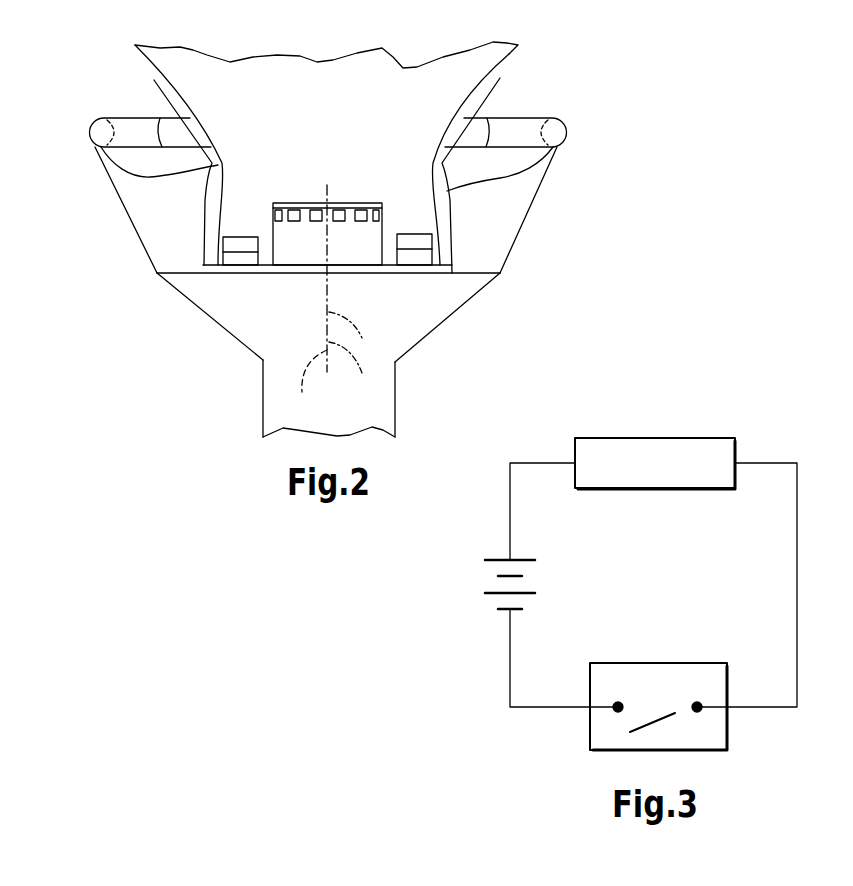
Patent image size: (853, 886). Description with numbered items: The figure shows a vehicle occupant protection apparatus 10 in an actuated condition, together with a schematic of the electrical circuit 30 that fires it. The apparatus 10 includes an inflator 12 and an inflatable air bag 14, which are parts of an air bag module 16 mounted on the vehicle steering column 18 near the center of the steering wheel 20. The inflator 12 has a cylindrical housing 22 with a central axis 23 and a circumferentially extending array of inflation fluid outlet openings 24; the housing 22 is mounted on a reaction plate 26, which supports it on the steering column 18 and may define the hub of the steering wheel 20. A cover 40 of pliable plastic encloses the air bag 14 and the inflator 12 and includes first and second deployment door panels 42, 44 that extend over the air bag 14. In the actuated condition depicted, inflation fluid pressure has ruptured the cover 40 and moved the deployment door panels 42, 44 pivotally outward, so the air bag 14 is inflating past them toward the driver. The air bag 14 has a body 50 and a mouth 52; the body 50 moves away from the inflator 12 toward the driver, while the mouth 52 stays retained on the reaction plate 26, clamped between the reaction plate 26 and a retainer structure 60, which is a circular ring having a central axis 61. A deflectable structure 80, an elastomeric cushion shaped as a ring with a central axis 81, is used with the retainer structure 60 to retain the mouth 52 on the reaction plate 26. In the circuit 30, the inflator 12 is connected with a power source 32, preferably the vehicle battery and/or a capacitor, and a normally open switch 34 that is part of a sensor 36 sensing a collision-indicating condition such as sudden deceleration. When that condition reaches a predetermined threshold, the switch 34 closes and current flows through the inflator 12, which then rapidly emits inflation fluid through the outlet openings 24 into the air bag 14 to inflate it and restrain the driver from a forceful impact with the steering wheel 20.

In FIG. 2, the vehicle occupant protection apparatus 10 is at (75, 53).
In FIG. 2, the inflator 12 is at (292, 260).
In FIG. 3, the inflator 12 is at (613, 438).
In FIG. 2, the air bag 14 is at (200, 217).
In FIG. 2, the air bag module 16 is at (183, 256).
In FIG. 2, the vehicle steering column 18 is at (262, 405).
In FIG. 2, the steering wheel 20 is at (107, 125).
In FIG. 2, the cylindrical housing 22 is at (318, 248).
In FIG. 2, the central axis 23 is at (307, 383).
In FIG. 2, the inflation fluid outlet openings 24 is at (362, 221).
In FIG. 2, the reaction plate 26 is at (262, 272).
In FIG. 3, the electrical circuit 30 is at (811, 446).
In FIG. 3, the power source 32 is at (522, 560).
In FIG. 3, the normally open switch 34 is at (675, 713).
In FIG. 3, the sensor 36 is at (653, 663).
In FIG. 2, the cover 40 is at (192, 174).
In FIG. 2, the first deployment door panel 42 is at (157, 88).
In FIG. 2, the second deployment door panel 44 is at (500, 86).
In FIG. 2, the body 50 is at (513, 53).
In FIG. 2, the mouth 52 is at (452, 248).
In FIG. 2, the retainer structure 60 is at (412, 243).
In FIG. 2, the central axis 61 is at (359, 278).
In FIG. 2, the deflectable structure 80 is at (414, 258).
In FIG. 2, the central axis 81 is at (356, 370).